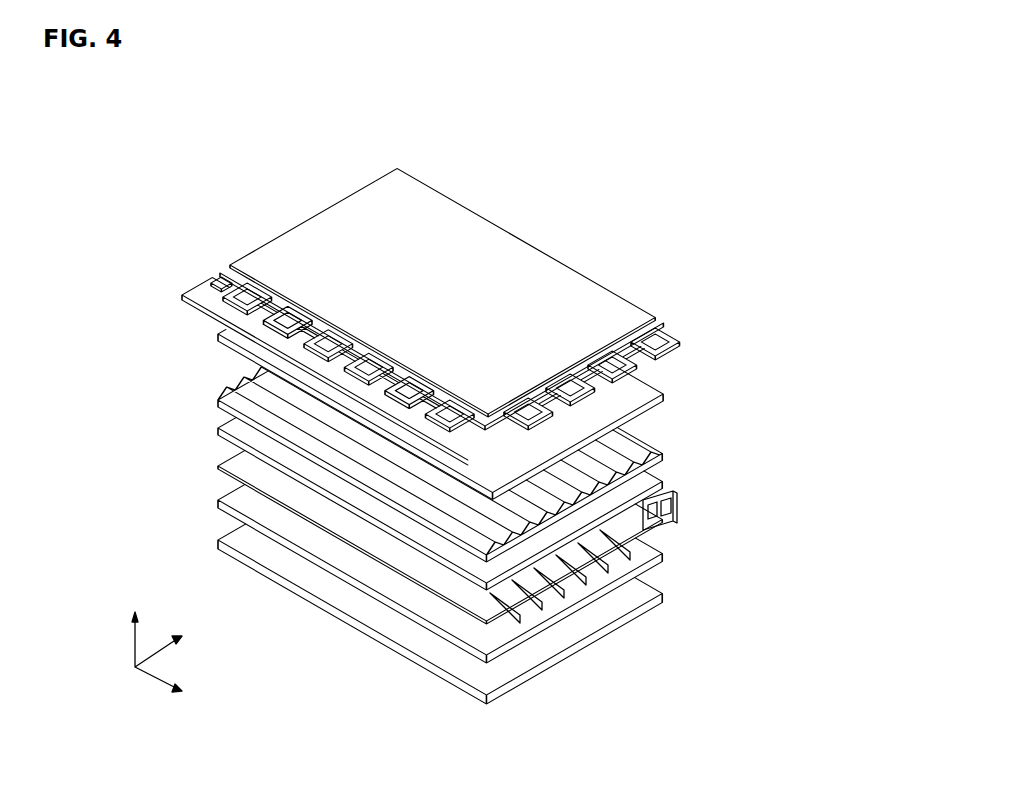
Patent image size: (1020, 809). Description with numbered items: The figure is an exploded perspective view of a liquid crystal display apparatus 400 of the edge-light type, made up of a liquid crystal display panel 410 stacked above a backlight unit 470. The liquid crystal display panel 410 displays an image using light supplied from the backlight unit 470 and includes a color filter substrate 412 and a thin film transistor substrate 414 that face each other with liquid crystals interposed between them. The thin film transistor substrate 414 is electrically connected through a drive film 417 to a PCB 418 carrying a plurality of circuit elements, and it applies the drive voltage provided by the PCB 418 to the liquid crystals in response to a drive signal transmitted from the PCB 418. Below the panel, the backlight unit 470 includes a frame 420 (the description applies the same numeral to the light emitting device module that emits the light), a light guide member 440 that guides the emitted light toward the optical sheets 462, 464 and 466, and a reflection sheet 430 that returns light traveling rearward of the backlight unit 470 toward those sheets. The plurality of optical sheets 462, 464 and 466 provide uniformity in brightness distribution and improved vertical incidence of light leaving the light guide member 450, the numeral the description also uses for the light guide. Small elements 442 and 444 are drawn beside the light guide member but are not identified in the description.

The liquid crystal display apparatus 400 is at (129, 147).
The liquid crystal display panel 410 is at (765, 290).
The color filter substrate 412 is at (618, 303).
The thin film transistor substrate 414 is at (664, 318).
The drive film 417 is at (225, 292).
The PCB 418 is at (203, 298).
The frame 420 is at (647, 608).
The reflection sheet 430 is at (650, 566).
The light guide member 440 is at (763, 525).
The light source 442 is at (674, 494).
The light source substrate 444 is at (678, 512).
The light guide member 450 is at (625, 552).
The optical sheet 462 is at (567, 585).
The optical sheet 464 is at (507, 552).
The optical sheet 466 is at (680, 389).
The backlight unit 470 is at (833, 743).